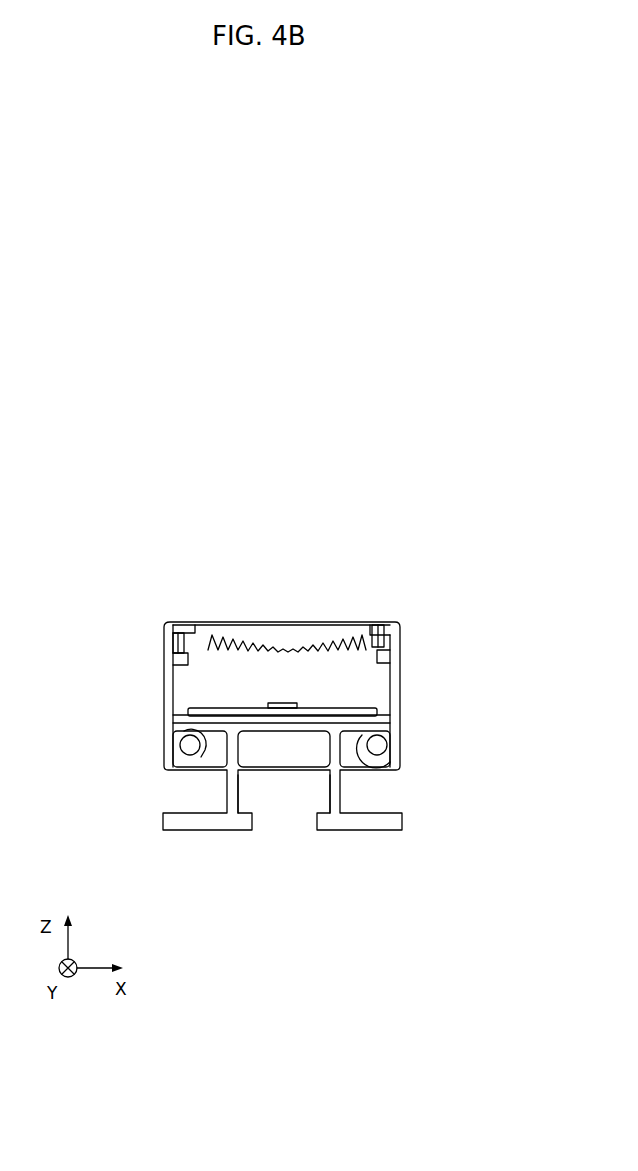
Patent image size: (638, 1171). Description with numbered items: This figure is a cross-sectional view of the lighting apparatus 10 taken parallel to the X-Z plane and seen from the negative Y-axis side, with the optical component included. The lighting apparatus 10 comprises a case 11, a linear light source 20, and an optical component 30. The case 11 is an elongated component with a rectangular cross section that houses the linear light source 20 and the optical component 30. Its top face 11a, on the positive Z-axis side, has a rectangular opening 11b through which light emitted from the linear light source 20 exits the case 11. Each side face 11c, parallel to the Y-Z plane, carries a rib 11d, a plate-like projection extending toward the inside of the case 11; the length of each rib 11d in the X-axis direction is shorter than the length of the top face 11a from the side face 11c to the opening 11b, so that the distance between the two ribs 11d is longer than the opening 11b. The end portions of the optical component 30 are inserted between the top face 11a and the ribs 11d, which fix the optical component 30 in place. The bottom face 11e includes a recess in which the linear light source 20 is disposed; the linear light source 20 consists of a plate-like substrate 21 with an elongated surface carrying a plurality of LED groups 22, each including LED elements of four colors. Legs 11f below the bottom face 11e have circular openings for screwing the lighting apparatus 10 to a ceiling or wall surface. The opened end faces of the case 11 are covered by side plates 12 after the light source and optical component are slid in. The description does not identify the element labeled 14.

The lighting apparatus 10 is at (432, 524).
The case 11 is at (492, 605).
The top face 11a is at (379, 625).
The opening 11b is at (357, 618).
The side face 11c is at (396, 688).
The rib 11d is at (385, 656).
The bottom face 11e is at (360, 769).
The legs 11f is at (342, 797).
The side plate 12 is at (172, 760).
The clip 14 is at (173, 641).
The linear light source 20 is at (332, 872).
The substrate 21 is at (308, 718).
The LED group 22 is at (280, 708).
The optical component 30 is at (263, 640).